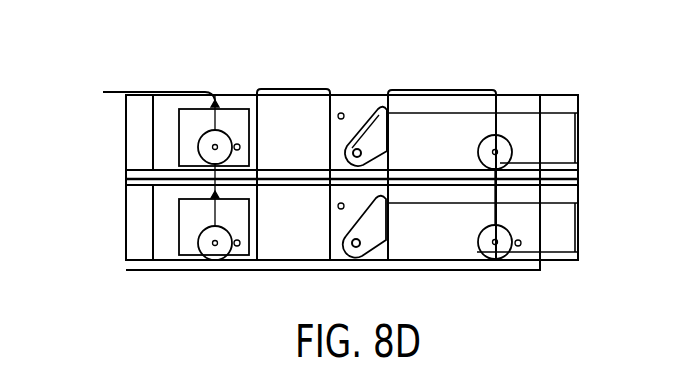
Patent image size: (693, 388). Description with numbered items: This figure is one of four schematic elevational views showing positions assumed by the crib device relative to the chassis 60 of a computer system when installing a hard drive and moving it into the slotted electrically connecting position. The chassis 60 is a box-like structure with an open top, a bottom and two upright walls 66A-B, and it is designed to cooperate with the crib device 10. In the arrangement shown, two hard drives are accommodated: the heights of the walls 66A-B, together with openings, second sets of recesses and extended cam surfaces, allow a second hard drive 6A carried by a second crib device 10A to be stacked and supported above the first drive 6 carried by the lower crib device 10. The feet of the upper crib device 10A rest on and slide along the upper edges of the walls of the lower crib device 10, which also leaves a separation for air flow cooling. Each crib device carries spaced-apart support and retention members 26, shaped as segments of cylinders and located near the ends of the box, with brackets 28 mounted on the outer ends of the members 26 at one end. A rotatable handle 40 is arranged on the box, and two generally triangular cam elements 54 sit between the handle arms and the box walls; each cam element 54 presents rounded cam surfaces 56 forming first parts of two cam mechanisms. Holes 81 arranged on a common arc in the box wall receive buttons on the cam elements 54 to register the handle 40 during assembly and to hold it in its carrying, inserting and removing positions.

The hard drive 6 is at (580, 248).
The second hard drive 6A is at (515, 93).
The crib device 10 is at (444, 229).
The second crib device 10A is at (577, 103).
The support and retention members 26 is at (198, 148).
The brackets 28 is at (237, 118).
The handle 40 is at (580, 143).
The cam elements 54 is at (365, 125).
The cam surfaces 56 is at (380, 110).
The chassis 60 is at (128, 91).
The upright walls 66A-B is at (110, 93).
The holes 81 is at (338, 115).